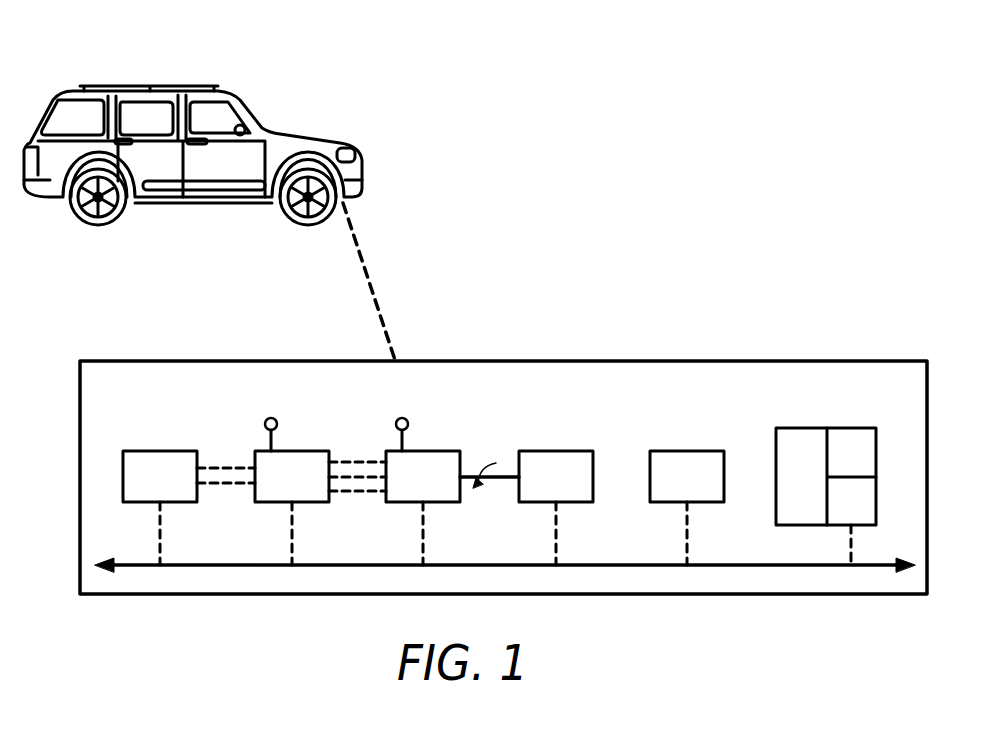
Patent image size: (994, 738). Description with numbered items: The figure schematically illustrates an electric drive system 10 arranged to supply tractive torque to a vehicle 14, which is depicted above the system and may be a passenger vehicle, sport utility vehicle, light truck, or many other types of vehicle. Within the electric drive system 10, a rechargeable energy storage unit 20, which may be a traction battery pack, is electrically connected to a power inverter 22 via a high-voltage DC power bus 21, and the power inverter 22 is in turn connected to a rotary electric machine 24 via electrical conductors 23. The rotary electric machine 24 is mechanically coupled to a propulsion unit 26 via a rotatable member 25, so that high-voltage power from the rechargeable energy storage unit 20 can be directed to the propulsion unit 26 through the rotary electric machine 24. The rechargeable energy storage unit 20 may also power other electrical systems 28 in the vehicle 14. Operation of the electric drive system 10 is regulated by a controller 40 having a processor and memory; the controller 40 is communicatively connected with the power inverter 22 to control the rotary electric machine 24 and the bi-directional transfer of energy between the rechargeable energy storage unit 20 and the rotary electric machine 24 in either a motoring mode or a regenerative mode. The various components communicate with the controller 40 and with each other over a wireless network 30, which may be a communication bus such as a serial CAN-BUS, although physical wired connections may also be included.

The electric drive system 10 is at (740, 335).
The vehicle 14 is at (98, 68).
The rechargeable energy storage unit 20 is at (162, 451).
The high-voltage DC power bus 21 is at (241, 456).
The power inverter 22 is at (291, 451).
The electrical conductors 23 is at (373, 456).
The rotary electric machine 24 is at (422, 451).
The rotatable member 25 is at (503, 457).
The propulsion unit 26 is at (555, 451).
The other electrical systems 28 is at (687, 451).
The wireless network 30 is at (227, 566).
The controller 40 is at (833, 428).